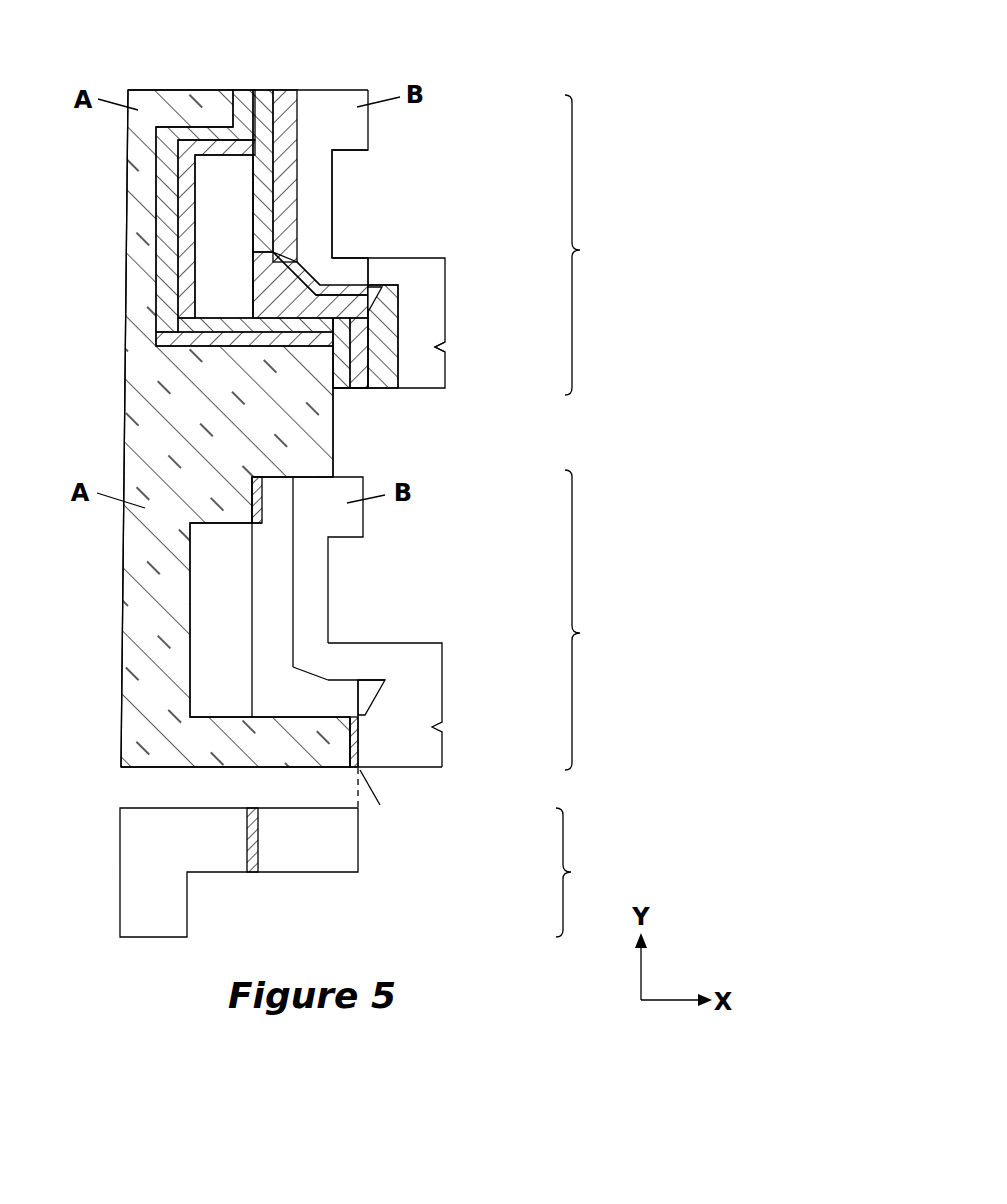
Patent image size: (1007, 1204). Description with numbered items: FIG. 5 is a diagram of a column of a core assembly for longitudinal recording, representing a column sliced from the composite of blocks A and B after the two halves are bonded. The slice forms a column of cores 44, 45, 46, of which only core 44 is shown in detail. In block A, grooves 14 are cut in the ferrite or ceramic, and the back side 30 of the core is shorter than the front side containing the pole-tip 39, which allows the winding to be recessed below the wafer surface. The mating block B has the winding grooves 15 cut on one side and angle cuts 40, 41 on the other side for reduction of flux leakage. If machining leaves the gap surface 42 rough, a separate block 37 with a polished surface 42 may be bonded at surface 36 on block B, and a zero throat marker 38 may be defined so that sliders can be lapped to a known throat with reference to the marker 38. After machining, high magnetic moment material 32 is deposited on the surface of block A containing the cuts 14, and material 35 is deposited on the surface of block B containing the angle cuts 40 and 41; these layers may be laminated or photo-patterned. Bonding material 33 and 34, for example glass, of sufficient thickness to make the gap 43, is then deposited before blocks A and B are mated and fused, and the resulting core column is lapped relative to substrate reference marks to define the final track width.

The grooves 14 is at (210, 196).
The winding grooves 15 is at (358, 168).
The back side 30 is at (186, 104).
The high magnetic moment material 32 is at (242, 92).
The bonding material 33 is at (261, 92).
The bonding material 34 is at (262, 203).
The high magnetic moment material 35 is at (287, 92).
The bonding surface 36 is at (350, 257).
The separate block 37 is at (427, 283).
The zero throat marker 38 is at (455, 349).
The pole-tip 39 is at (349, 408).
The angle cut 40 is at (322, 283).
The angle cut 41 is at (372, 318).
The gap surface 42 is at (375, 400).
The gap 43 is at (374, 402).
The core 44 is at (587, 245).
The core 45 is at (365, 620).
The core 46 is at (363, 852).